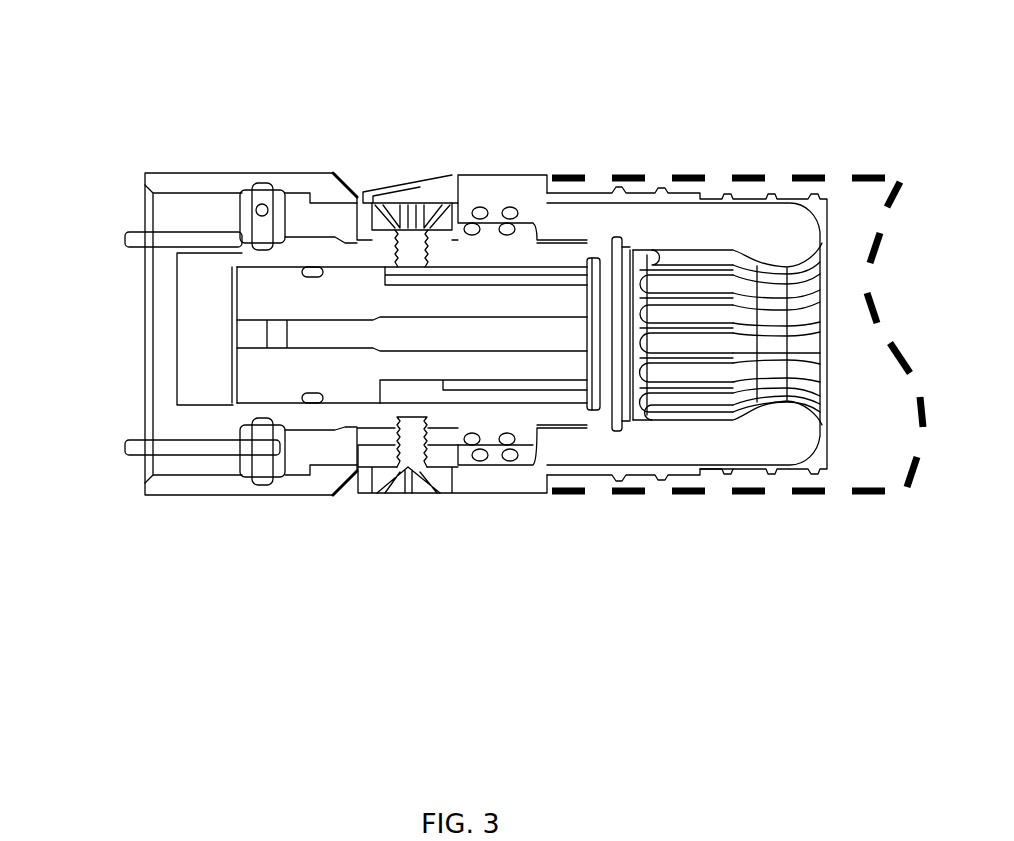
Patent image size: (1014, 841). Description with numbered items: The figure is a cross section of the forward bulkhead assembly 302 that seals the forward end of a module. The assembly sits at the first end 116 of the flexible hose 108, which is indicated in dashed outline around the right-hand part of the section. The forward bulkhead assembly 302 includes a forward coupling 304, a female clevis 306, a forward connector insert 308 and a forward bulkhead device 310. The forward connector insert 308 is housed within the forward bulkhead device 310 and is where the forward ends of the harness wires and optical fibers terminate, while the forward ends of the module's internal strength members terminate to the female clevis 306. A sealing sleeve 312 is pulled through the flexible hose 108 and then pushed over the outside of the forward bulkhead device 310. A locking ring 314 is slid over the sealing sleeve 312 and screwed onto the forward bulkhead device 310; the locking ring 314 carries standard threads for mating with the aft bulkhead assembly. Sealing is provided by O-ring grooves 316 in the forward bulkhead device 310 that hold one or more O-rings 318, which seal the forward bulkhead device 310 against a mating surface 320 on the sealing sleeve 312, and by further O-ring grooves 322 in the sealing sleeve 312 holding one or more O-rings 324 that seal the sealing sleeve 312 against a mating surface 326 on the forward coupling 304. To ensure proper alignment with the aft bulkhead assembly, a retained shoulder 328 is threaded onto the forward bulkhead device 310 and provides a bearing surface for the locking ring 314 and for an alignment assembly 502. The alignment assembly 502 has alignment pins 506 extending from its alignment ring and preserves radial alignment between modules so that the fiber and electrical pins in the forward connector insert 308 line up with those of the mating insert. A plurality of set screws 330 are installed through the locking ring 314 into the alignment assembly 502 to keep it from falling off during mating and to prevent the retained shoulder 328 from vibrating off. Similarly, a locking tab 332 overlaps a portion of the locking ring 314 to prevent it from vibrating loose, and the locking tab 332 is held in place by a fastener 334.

The forward bulkhead assembly 302 is at (714, 60).
The forward coupling 304 is at (630, 205).
The female clevis 306 is at (803, 244).
The forward connector insert 308 is at (250, 295).
The forward bulkhead device 310 is at (666, 473).
The sealing sleeve 312 is at (452, 470).
The locking ring 314 is at (197, 180).
The O-ring grooves 316 is at (490, 208).
The O-rings 318 is at (459, 200).
The mating surface 320 is at (496, 228).
The O-ring grooves 322 is at (503, 463).
The O-rings 324 is at (483, 464).
The mating surface 326 is at (530, 455).
The retained shoulder 328 is at (322, 205).
The set screws 330 is at (263, 206).
The locking tab 332 is at (362, 488).
The fastener 334 is at (398, 485).
The alignment assembly 502 is at (268, 463).
The alignment pins 506 is at (124, 240).
The flexible hose 108 is at (803, 495).
The first end 116 is at (724, 570).